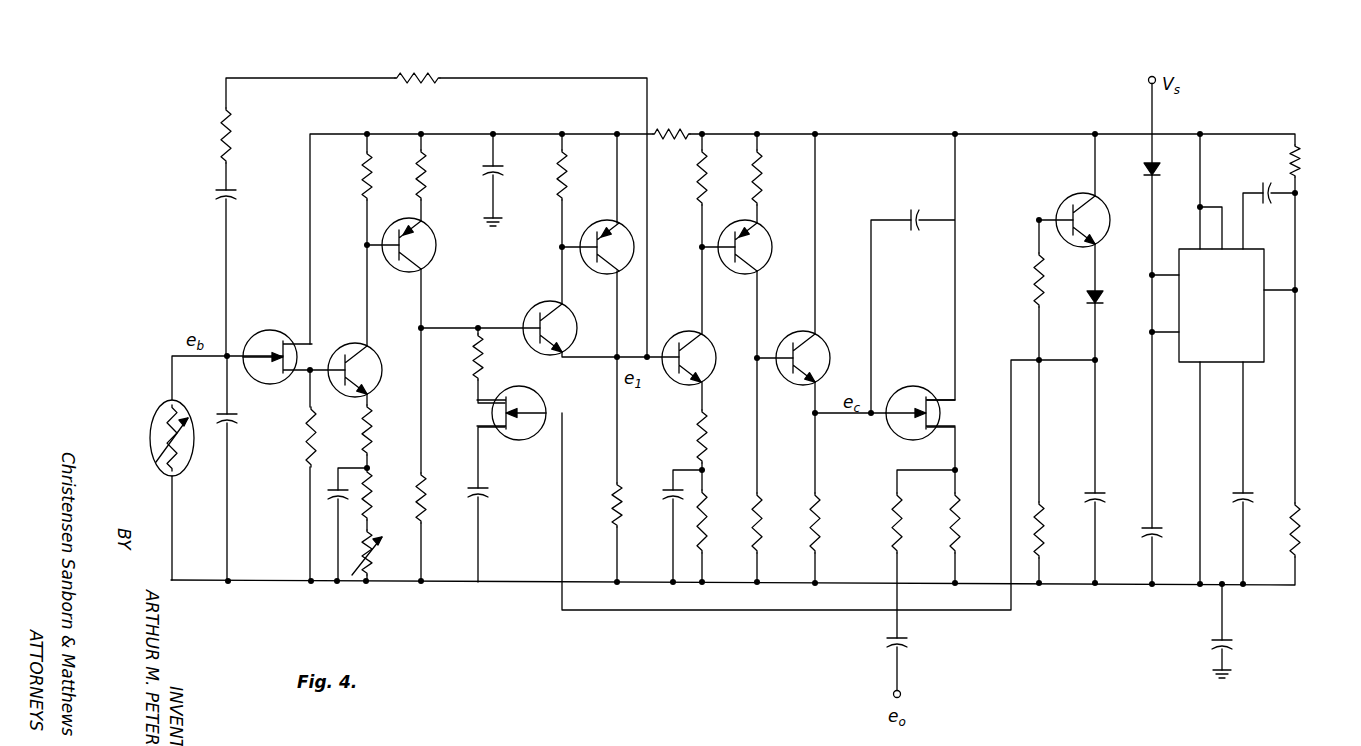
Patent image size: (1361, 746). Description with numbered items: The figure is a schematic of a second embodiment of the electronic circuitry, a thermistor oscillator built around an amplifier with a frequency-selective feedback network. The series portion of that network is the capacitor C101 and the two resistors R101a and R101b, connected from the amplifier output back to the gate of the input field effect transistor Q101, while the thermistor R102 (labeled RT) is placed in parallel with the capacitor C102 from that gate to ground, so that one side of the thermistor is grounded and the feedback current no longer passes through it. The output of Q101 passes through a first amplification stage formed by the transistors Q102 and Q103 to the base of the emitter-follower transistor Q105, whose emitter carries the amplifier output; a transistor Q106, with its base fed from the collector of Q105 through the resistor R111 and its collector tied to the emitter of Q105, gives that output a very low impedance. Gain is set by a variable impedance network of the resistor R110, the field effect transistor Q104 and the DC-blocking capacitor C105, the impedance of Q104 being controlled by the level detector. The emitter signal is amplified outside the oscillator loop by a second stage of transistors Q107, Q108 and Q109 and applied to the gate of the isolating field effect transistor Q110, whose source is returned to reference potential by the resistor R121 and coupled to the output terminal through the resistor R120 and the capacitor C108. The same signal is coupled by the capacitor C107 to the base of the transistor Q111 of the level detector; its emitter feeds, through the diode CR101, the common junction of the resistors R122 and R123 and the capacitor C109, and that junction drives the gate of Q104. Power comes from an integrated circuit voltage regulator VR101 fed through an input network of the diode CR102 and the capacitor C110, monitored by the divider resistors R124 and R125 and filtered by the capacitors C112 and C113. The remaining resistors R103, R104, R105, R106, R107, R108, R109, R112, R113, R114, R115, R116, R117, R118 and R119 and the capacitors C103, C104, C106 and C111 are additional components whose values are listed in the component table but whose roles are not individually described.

The resistor R101a is at (222, 125).
The resistor R101b is at (470, 58).
The capacitor C101 is at (216, 194).
The thermistor RT R102 is at (150, 430).
The capacitor C102 is at (258, 418).
The resistor R103 is at (307, 454).
The capacitor C103 is at (330, 490).
The resistor R104 is at (357, 168).
The resistor R105 is at (388, 420).
The resistor R106 is at (388, 495).
The adjustable resistor R107 is at (395, 530).
The resistor R108 is at (431, 180).
The resistor R109 is at (428, 486).
The resistor R110 is at (471, 362).
The resistor R111 is at (571, 180).
The resistor R112 is at (608, 498).
The resistor R113 is at (706, 114).
The resistor R114 is at (695, 176).
The resistor R115 is at (696, 431).
The resistor R116 is at (708, 508).
The resistor R117 is at (750, 168).
The resistor R118 is at (764, 502).
The resistor R119 is at (822, 510).
The resistor R120 is at (892, 532).
The resistor R121 is at (946, 512).
The resistor R122 is at (1034, 278).
The resistor R123 is at (1046, 496).
The resistor R124 is at (1304, 174).
The resistor R125 is at (1300, 540).
The capacitor C104 is at (506, 174).
The DC-blocking capacitor C105 is at (490, 492).
The capacitor C106 is at (664, 492).
The capacitor C107 is at (914, 210).
The capacitor C108 is at (886, 643).
The capacitor C109 is at (1128, 490).
The capacitor C110 is at (1180, 514).
The capacitor C111 is at (1212, 644).
The capacitor C112 is at (1268, 184).
The capacitor C113 is at (1254, 492).
The diode CR101 is at (1112, 292).
The diode CR102 is at (1143, 166).
The integrated circuit voltage regulator VR101 is at (1264, 356).
The field effect transistor Q101 is at (283, 333).
The transistor Q102 is at (374, 344).
The transistor Q103 is at (426, 264).
The field effect transistor Q104 is at (540, 396).
The transistor Q105 is at (540, 295).
The transistor Q106 is at (605, 208).
The transistor Q107 is at (740, 316).
The transistor Q108 is at (760, 238).
The transistor Q109 is at (838, 330).
The isolating field effect transistor Q110 is at (934, 388).
The transistor Q111 is at (1062, 186).